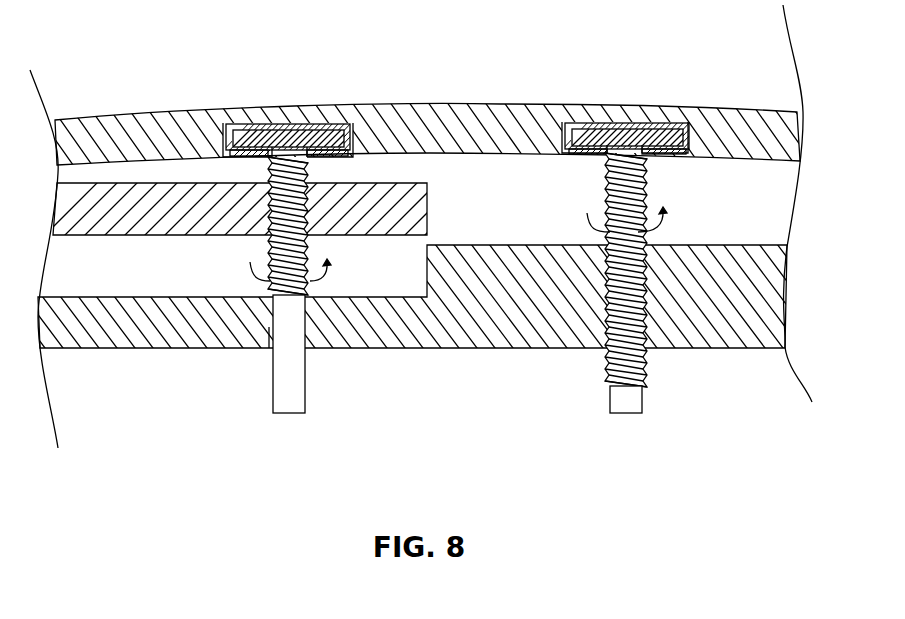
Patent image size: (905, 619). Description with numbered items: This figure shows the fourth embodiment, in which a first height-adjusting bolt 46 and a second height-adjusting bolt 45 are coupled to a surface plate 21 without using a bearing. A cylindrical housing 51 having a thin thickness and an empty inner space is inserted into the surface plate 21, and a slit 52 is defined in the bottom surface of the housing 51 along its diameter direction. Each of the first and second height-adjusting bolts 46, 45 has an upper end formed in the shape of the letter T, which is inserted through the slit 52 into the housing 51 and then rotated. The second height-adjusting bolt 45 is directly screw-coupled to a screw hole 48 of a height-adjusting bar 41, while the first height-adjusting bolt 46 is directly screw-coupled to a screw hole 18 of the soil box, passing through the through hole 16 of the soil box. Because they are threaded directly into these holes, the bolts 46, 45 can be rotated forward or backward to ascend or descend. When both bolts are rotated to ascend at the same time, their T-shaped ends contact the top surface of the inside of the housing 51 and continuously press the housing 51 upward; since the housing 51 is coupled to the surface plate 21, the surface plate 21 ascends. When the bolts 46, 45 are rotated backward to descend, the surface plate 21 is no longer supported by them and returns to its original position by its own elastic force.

The surface plate 21 is at (147, 110).
The housing 51 is at (305, 123).
The slit 52 is at (270, 153).
The second height-adjusting bolt 45 is at (307, 178).
The screw hole 48 is at (263, 222).
The height-adjusting bar 41 is at (428, 197).
The first height-adjusting bolt 46 is at (647, 196).
The through hole 16 is at (270, 348).
The screw hole 18 is at (600, 328).